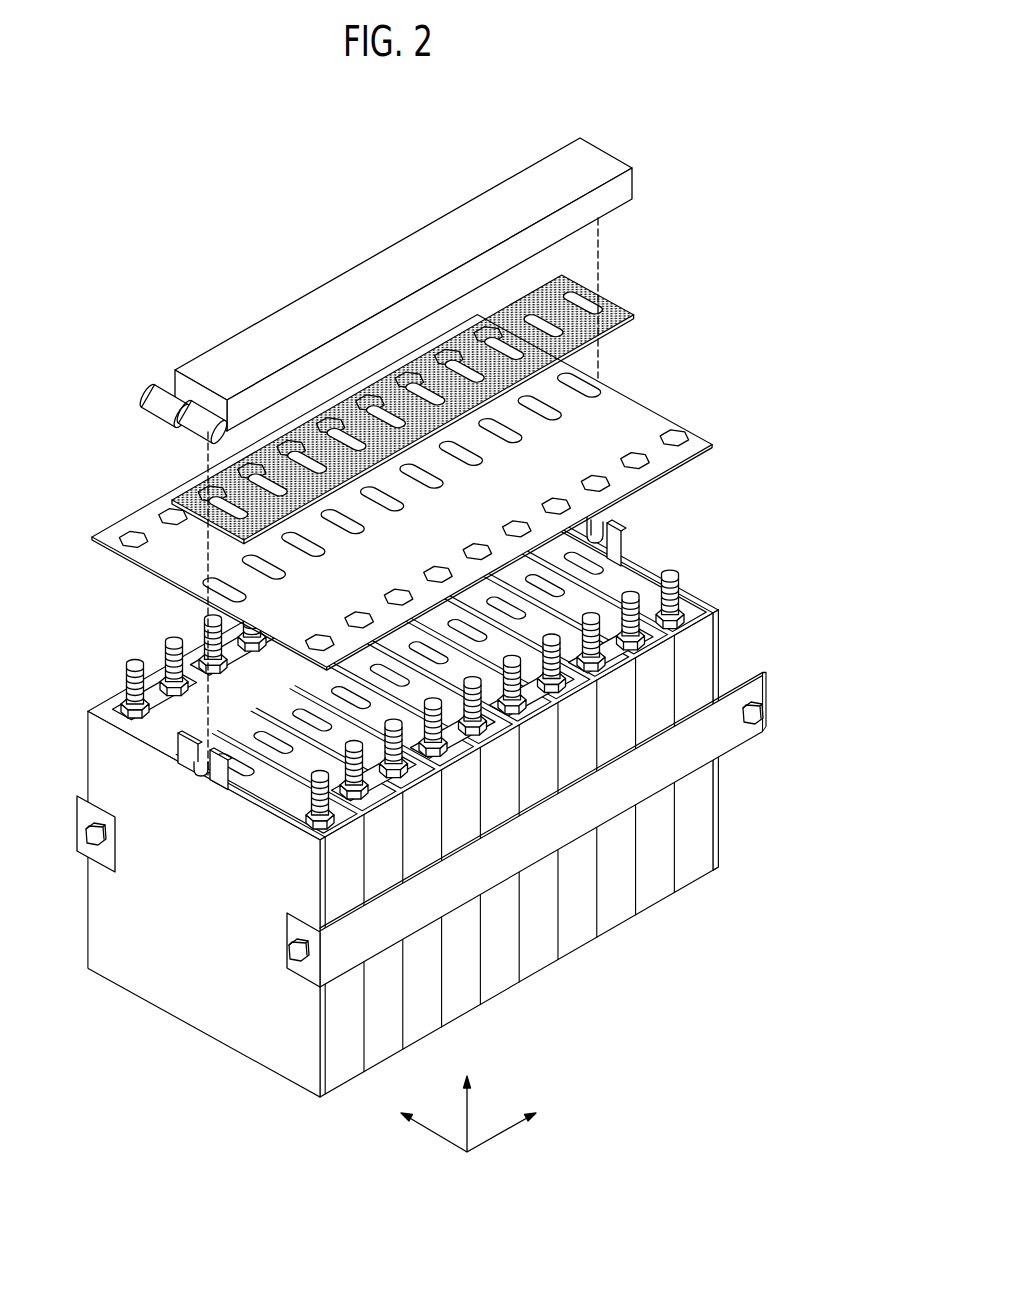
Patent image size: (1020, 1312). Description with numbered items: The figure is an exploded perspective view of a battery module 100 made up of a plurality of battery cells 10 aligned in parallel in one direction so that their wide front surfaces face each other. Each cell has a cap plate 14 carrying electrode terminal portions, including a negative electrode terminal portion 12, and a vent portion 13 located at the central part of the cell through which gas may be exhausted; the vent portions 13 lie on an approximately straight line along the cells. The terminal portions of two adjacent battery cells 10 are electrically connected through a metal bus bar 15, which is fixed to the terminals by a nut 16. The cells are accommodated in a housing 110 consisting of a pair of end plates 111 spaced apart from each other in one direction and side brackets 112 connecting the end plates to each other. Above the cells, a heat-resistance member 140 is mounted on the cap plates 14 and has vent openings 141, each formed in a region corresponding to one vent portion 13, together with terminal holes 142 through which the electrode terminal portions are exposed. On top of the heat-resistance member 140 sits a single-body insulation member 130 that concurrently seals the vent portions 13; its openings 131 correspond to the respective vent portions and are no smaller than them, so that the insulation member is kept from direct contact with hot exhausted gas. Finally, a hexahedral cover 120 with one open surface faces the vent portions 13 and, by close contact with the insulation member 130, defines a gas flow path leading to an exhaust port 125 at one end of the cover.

The battery module 100 is at (419, 620).
The battery cell 10 is at (660, 870).
The negative electrode terminal portion 12 is at (673, 580).
The vent portion 13 is at (585, 562).
The cap plate 14 is at (692, 627).
The bus bar 15 is at (157, 690).
The nut 16 is at (123, 697).
The housing 110 is at (421, 901).
The end plate 111 is at (137, 907).
The side bracket 112 is at (307, 972).
The cover 120 is at (349, 267).
The exhaust port 125 is at (141, 397).
The insulation member 130 is at (430, 384).
The opening 131 is at (585, 300).
The heat-resistance member 140 is at (417, 493).
The vent opening 141 is at (583, 386).
The terminal hole 142 is at (678, 436).